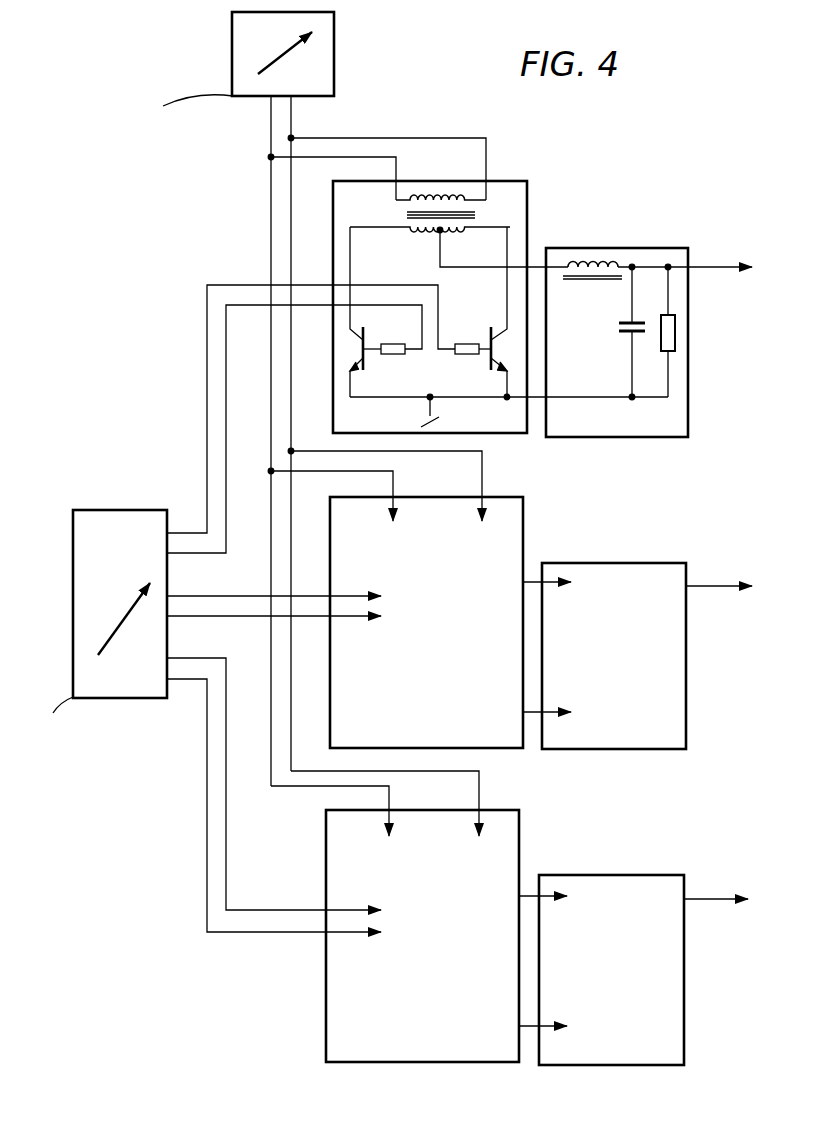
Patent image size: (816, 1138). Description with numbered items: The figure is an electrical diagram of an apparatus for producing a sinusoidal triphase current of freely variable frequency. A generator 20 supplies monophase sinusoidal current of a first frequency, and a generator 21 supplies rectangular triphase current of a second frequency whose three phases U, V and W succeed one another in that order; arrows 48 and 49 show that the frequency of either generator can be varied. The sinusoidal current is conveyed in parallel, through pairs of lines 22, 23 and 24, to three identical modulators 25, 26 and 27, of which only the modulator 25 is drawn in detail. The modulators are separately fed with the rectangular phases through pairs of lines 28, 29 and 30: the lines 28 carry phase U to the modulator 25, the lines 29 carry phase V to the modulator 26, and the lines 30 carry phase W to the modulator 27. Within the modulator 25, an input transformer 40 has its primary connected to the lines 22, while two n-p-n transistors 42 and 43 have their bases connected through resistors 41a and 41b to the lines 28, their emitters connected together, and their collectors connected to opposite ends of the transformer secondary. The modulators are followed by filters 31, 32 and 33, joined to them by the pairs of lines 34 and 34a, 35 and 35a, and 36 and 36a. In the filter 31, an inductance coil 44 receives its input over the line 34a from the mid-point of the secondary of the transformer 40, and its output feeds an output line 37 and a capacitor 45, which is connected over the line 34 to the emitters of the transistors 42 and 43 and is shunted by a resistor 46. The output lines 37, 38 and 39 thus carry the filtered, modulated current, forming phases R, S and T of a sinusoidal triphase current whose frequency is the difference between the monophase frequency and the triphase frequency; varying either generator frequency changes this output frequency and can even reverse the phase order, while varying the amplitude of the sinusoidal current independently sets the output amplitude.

The generator of monophase sinusoidal current 20 is at (335, 57).
The arrow 48 is at (256, 62).
The generator of rectangular triphase current 21 is at (111, 515).
The arrow 49 is at (103, 628).
The pair of lines 22 is at (329, 147).
The pair of lines 23 is at (302, 456).
The pair of lines 24 is at (300, 776).
The modulator 25 is at (518, 186).
The modulator 26 is at (521, 503).
The modulator 27 is at (519, 813).
The pair of lines 28 is at (303, 292).
The pair of lines 29 is at (302, 604).
The pair of lines 30 is at (271, 920).
The filter 31 is at (650, 252).
The filter 32 is at (640, 568).
The filter 33 is at (649, 886).
The line 34 is at (536, 402).
The line 34a is at (534, 270).
The line 35 is at (529, 714).
The line 35a is at (529, 580).
The line 36 is at (526, 1028).
The line 36a is at (525, 893).
The output line 37 is at (708, 266).
The output line 38 is at (708, 584).
The output line 39 is at (705, 898).
The input transformer 40 is at (407, 216).
The resistor 41a is at (466, 344).
The resistor 41b is at (393, 344).
The transistor 42 is at (366, 370).
The transistor 43 is at (488, 370).
The inductance coil 44 is at (580, 282).
The capacitor 45 is at (619, 334).
The resistor 46 is at (676, 334).